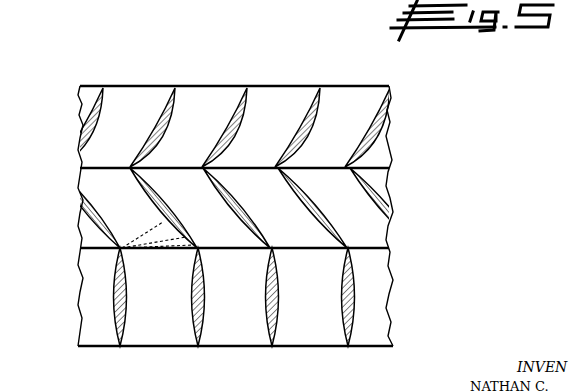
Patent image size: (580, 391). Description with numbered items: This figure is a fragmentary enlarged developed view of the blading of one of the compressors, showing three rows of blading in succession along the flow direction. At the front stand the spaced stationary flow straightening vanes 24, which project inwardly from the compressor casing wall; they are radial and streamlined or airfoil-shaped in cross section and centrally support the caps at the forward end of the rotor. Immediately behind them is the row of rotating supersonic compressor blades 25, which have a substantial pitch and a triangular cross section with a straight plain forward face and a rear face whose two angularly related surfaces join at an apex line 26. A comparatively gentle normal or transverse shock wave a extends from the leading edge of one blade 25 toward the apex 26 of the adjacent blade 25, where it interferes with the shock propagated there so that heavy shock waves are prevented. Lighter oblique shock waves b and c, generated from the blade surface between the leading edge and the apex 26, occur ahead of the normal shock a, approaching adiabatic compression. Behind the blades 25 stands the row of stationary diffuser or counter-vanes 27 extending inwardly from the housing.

The flow straightening vanes 24 is at (343, 330).
The supersonic compressor blades 25 is at (99, 220).
The apex line 26 is at (318, 223).
The stationary diffuser or counter-vanes 27 is at (383, 141).
The normal shock wave a is at (142, 228).
The light oblique shock wave b is at (167, 231).
The light oblique shock wave c is at (178, 244).